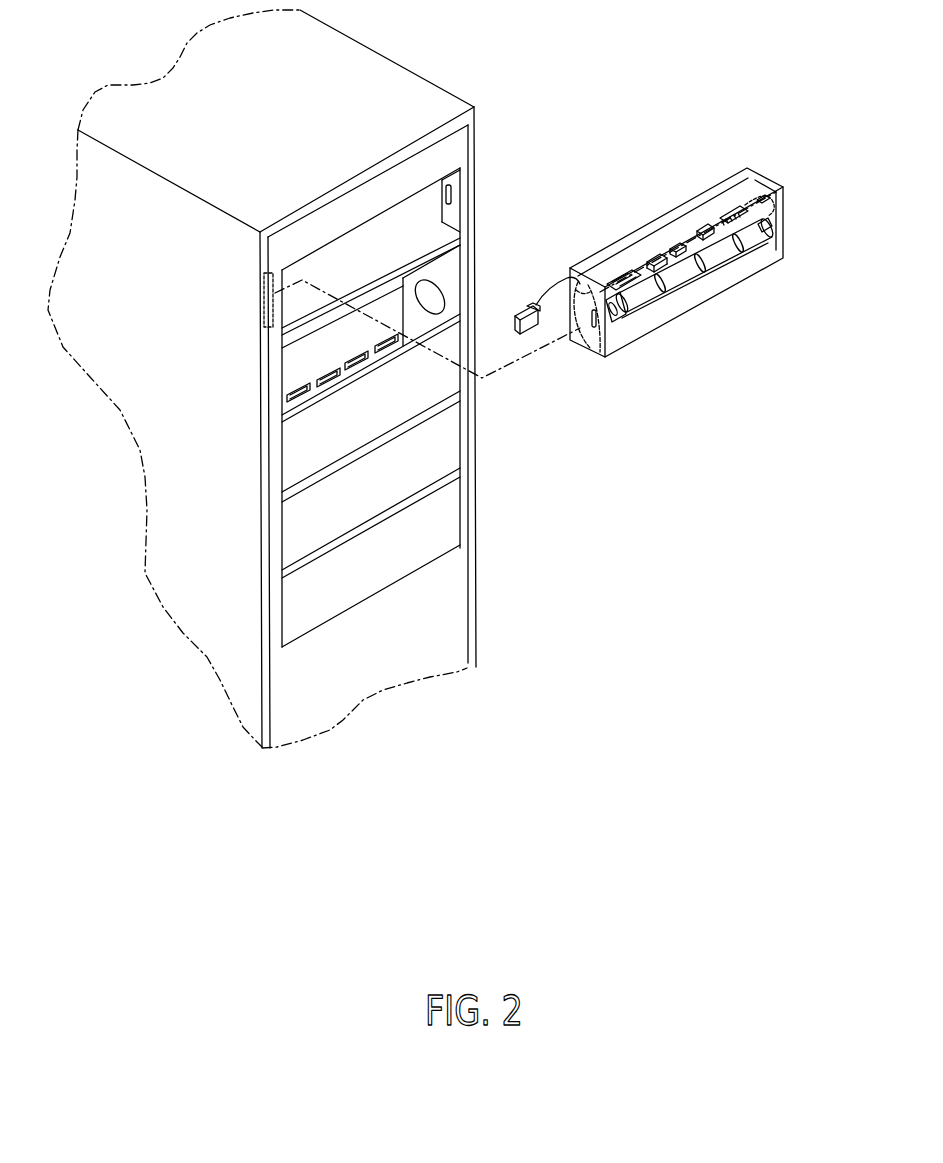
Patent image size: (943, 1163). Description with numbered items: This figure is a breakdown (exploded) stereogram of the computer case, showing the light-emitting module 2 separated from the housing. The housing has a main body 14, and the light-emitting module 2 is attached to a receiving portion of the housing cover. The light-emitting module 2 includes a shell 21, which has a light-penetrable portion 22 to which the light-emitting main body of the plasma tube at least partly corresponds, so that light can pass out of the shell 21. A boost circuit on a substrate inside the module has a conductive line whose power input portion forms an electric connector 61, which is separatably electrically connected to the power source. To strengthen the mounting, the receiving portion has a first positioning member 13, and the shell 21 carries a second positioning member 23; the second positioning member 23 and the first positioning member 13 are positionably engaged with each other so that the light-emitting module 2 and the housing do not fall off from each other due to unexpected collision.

The light-emitting module 2 is at (660, 200).
The first positioning member 13 is at (495, 186).
The main body 14 is at (382, 82).
The shell 21 is at (740, 182).
The light-penetrable portion 22 is at (724, 275).
The second positioning member 23 is at (592, 322).
The electric connector 61 is at (518, 307).